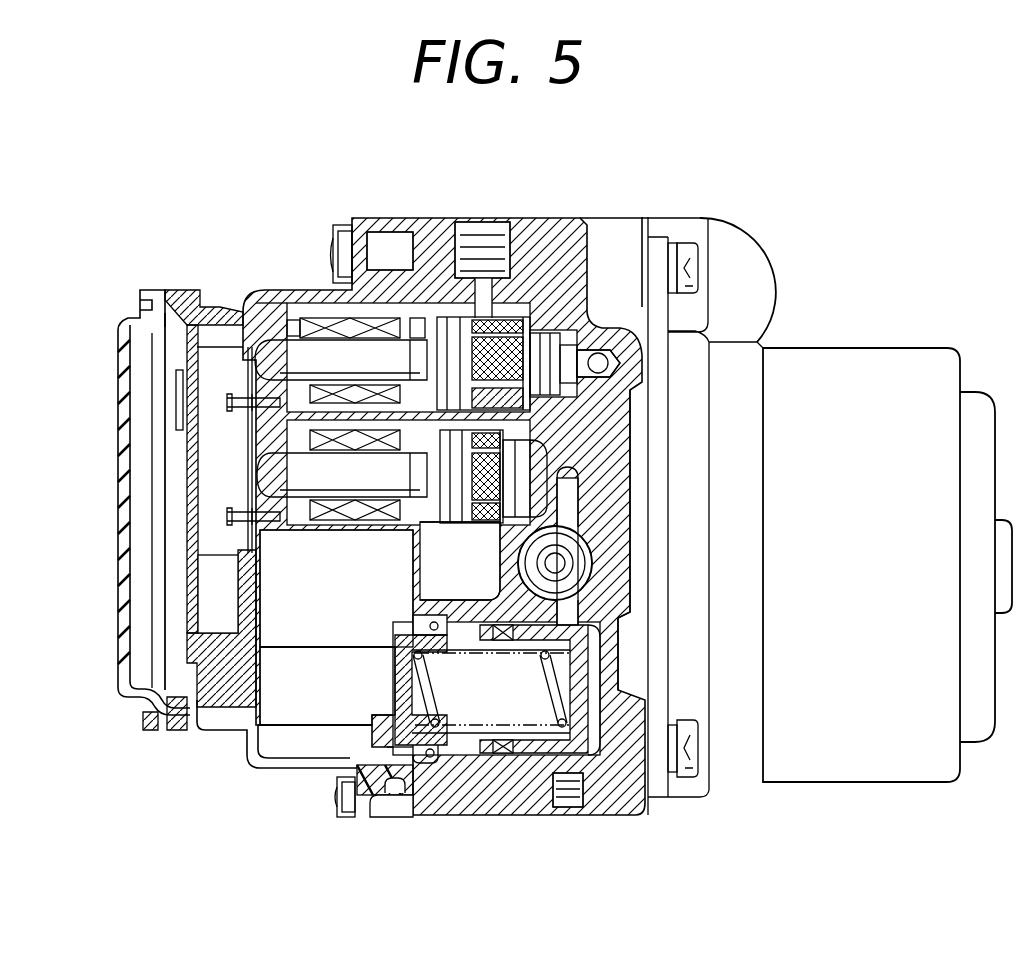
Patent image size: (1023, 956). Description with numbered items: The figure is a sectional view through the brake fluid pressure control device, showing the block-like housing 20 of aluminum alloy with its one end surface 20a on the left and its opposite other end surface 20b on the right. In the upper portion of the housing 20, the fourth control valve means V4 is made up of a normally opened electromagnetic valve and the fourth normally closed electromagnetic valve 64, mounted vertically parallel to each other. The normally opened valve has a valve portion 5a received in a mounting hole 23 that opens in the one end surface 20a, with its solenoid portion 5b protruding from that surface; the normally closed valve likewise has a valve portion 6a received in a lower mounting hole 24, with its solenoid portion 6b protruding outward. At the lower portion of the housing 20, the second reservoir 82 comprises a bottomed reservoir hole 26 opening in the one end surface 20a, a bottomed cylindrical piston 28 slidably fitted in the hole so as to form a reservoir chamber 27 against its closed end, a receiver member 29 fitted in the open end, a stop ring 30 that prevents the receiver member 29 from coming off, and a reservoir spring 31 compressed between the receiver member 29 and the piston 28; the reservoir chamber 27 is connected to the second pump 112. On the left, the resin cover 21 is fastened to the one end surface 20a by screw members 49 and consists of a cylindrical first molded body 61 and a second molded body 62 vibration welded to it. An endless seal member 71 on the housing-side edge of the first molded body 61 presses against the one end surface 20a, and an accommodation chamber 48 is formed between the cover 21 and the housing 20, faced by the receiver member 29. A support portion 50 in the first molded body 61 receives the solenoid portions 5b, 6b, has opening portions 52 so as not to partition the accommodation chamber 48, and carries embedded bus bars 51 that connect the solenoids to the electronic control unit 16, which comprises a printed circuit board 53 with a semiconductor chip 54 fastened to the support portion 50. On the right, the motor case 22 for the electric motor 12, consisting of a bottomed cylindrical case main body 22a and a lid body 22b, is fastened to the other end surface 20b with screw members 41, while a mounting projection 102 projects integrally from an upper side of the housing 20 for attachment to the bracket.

The housing 20 is at (552, 226).
The one end surface 20a is at (408, 248).
The other end surface 20b is at (655, 542).
The semiconductor chip 54 is at (458, 303).
The screw member 49 is at (338, 226).
The endless seal member 71 is at (407, 800).
The second reservoir 82 is at (385, 747).
The solenoid portion 5b is at (305, 328).
The fourth control valve means V4 is at (330, 312).
The valve portion 5a is at (540, 377).
The mounting hole 23 is at (538, 337).
The solenoid portion 6b is at (312, 522).
The valve portion 6a is at (487, 503).
The fourth normally closed electromagnetic valve 64 is at (382, 537).
The accommodation chamber 48 is at (313, 631).
The receiver member 29 is at (403, 650).
The mounting hole 24 is at (565, 487).
The second pump 112 is at (598, 566).
The reservoir chamber 27 is at (593, 703).
The reservoir spring 31 is at (580, 630).
The reservoir hole 26 is at (462, 743).
The stop ring 30 is at (442, 790).
The piston 28 is at (535, 750).
The electric motor 12 is at (830, 516).
The motor case 22 is at (830, 516).
The case main body 22a is at (810, 290).
The lid body 22b is at (667, 430).
The mounting projection 102 is at (744, 246).
The screw member 41 is at (698, 263).
The cover 21 is at (209, 574).
The support portion 50 is at (205, 645).
The bus bar 51 is at (190, 620).
The printed circuit board 53 is at (190, 455).
The opening portion 52 is at (247, 477).
The electronic control unit 16 is at (165, 403).
The second molded body 62 is at (143, 712).
The first molded body 61 is at (172, 754).